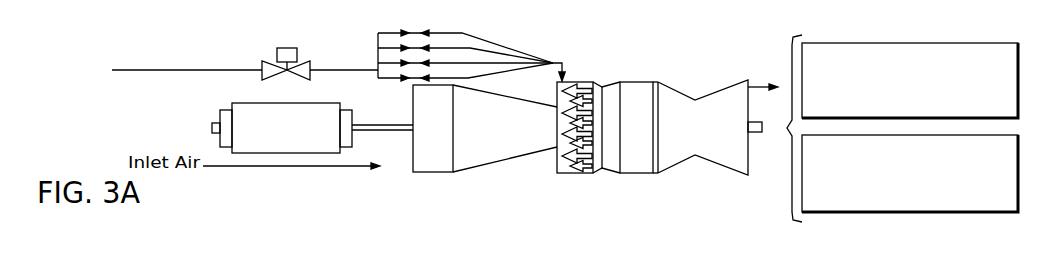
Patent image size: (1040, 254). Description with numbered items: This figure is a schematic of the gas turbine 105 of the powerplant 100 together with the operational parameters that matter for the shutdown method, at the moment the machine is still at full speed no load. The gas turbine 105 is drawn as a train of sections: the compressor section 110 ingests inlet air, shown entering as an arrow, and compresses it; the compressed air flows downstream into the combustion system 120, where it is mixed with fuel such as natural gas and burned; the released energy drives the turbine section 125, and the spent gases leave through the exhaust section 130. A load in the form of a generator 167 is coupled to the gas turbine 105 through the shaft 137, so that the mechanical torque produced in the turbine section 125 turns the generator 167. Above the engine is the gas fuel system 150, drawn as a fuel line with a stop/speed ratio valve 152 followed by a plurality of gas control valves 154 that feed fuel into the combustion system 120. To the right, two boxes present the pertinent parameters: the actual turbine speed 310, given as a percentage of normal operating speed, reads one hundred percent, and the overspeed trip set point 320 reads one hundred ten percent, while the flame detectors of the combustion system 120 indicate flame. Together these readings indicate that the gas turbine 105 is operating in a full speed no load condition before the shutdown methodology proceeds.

The powerplant 100 is at (66, 104).
The gas turbine 105 is at (546, 207).
The compressor section 110 is at (472, 178).
The combustion system 120 is at (601, 184).
The turbine section 125 is at (653, 185).
The exhaust section 130 is at (699, 184).
The shaft 137 is at (377, 125).
The gas fuel system 150 is at (155, 55).
The stop/speed ratio valve 152 is at (276, 53).
The gas control valves 154 is at (379, 32).
The generator 167 is at (247, 103).
The actual turbine speed 310 is at (943, 213).
The overspeed trip set point 320 is at (950, 42).